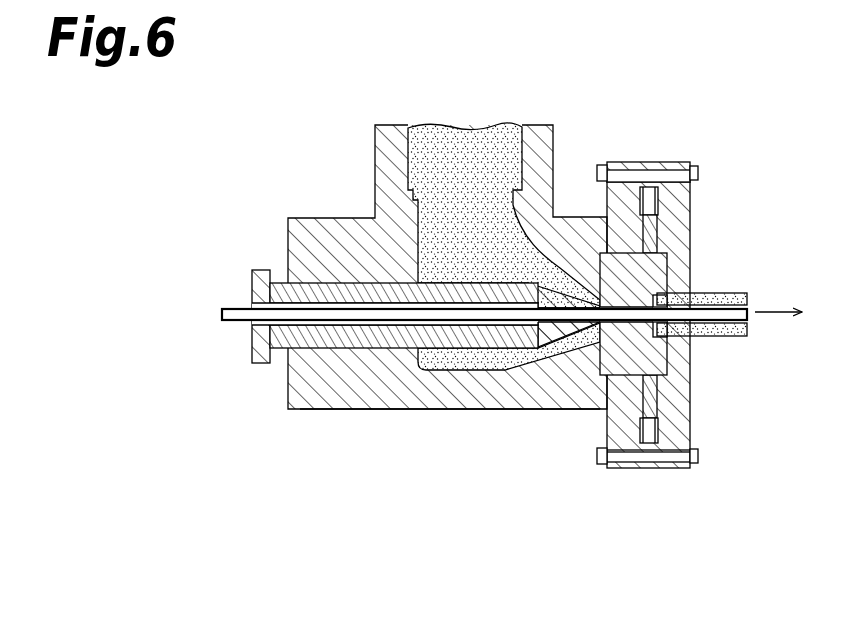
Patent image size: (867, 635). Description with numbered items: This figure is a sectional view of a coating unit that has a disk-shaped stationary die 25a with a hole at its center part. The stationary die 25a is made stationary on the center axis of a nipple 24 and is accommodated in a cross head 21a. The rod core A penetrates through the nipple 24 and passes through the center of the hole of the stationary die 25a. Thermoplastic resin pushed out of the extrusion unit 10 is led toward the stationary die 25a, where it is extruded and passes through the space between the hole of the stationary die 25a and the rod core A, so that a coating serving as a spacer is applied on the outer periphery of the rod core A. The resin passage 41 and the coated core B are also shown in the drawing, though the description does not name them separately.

The extrusion unit 10 is at (553, 140).
The resin flow passage 41 is at (420, 198).
The nipple 24 is at (314, 340).
The cross head 21a is at (428, 413).
The stationary die 25a is at (607, 376).
The rod core A is at (230, 310).
The coated wire B is at (711, 292).